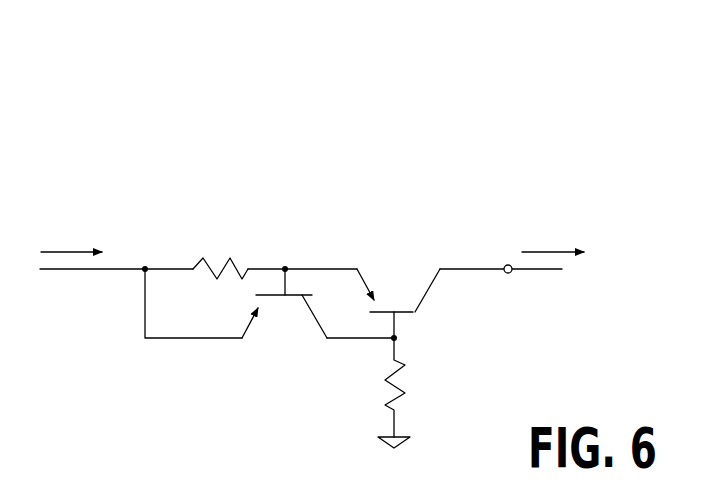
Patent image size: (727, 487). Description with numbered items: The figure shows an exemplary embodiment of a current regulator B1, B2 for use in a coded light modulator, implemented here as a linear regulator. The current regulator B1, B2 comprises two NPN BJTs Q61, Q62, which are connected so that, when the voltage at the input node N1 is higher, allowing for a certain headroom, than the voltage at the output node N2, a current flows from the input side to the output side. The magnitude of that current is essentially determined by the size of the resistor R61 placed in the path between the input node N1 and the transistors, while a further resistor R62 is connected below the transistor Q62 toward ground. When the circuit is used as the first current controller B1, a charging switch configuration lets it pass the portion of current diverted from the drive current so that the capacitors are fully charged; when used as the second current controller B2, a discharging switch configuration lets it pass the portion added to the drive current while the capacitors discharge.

The first current controller B1 is at (357, 234).
The second current controller B2 is at (553, 128).
The input node N1 is at (145, 268).
The output node N2 is at (508, 265).
The resistor R61 is at (230, 258).
The resistor R62 is at (402, 370).
The NPN BJT Q61 is at (250, 334).
The NPN BJT Q62 is at (417, 314).